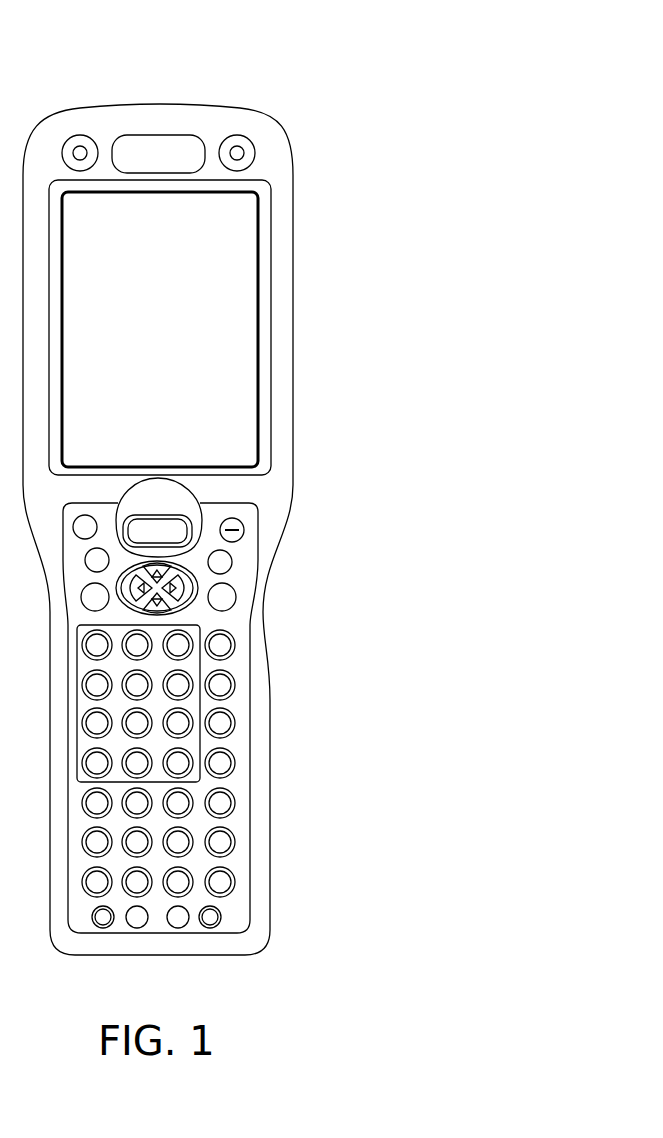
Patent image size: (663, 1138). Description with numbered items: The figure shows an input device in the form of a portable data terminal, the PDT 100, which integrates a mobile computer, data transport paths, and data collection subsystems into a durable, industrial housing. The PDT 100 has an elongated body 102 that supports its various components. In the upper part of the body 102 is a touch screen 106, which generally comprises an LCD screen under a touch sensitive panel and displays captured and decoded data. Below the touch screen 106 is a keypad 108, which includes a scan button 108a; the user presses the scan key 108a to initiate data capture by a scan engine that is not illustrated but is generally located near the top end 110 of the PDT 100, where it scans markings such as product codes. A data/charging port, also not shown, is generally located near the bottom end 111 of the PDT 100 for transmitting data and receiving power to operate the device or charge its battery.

The portable data terminal 100 is at (291, 67).
The elongated body 102 is at (310, 279).
The touch screen 106 is at (180, 323).
The keypad 108 is at (238, 625).
The scan button 108a is at (193, 508).
The top end 110 is at (168, 103).
The bottom end 111 is at (172, 955).